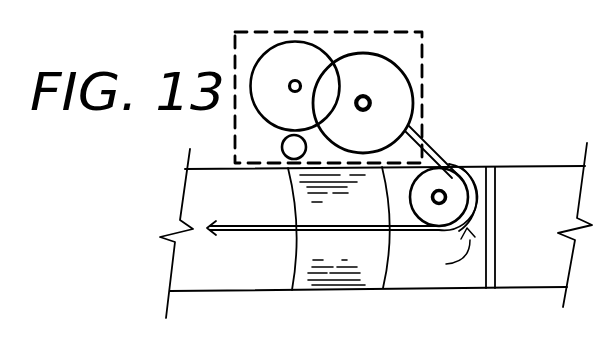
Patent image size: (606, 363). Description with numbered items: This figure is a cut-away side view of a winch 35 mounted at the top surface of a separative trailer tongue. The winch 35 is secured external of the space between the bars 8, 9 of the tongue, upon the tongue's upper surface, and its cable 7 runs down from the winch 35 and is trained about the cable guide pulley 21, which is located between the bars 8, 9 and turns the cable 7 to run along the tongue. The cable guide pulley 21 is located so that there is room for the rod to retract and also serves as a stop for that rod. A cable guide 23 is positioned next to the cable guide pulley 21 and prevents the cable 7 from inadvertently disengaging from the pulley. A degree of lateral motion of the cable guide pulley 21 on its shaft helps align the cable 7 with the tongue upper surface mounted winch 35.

The cable 7 is at (431, 150).
The bar 8 is at (330, 273).
The bar 9 is at (270, 272).
The cable guide pulley 21 is at (444, 180).
The cable guide 23 is at (444, 257).
The winch 35 is at (398, 45).